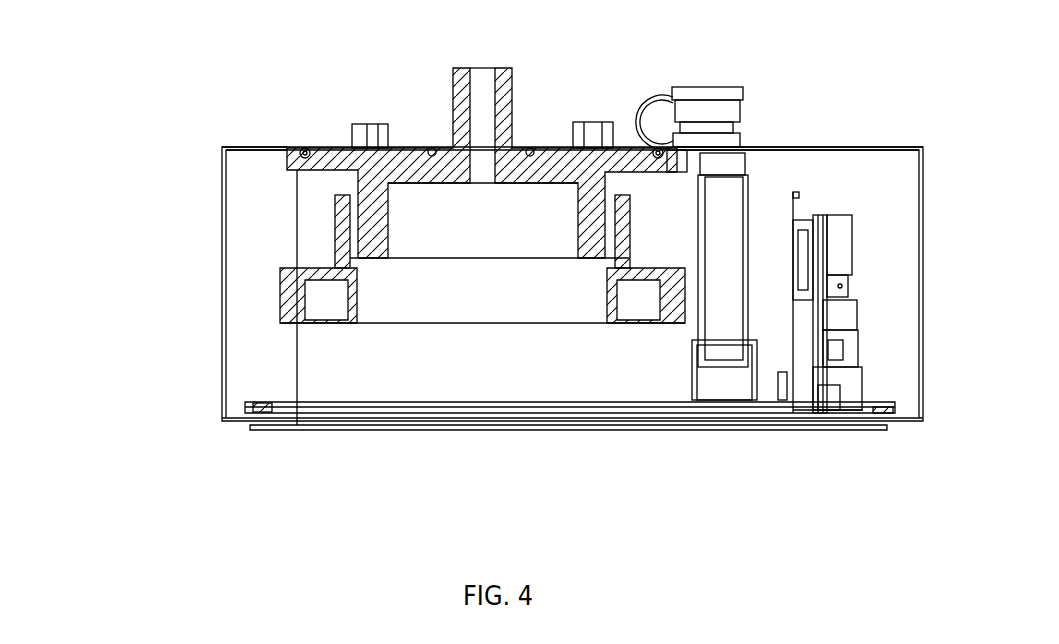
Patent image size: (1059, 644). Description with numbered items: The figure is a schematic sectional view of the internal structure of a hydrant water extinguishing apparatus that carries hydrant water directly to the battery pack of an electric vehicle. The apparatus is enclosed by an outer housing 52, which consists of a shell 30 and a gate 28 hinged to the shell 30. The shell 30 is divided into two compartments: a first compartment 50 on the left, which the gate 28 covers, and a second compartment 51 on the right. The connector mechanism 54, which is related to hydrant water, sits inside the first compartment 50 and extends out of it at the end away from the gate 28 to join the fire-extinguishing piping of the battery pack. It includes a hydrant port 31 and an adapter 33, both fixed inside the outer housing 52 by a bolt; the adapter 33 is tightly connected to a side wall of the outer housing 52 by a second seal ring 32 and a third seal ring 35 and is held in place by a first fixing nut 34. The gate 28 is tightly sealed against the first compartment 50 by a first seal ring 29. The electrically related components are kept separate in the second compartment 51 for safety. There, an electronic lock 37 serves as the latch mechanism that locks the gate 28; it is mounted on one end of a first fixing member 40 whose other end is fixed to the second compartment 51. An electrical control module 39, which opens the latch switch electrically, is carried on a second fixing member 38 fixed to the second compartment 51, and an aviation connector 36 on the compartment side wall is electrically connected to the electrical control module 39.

The gate 28 is at (253, 428).
The first seal ring 29 is at (247, 410).
The shell 30 is at (222, 397).
The hydrant port 31 is at (292, 295).
The second seal ring 32 is at (280, 147).
The adapter 33 is at (328, 165).
The first fixing nut 34 is at (367, 127).
The third seal ring 35 is at (430, 147).
The aviation connector 36 is at (710, 130).
The electronic lock 37 is at (718, 230).
The second fixing member 38 is at (793, 193).
The electrical control module 39 is at (826, 255).
The first fixing member 40 is at (695, 337).
The first compartment 50 is at (262, 208).
The second compartment 51 is at (893, 350).
The outer housing 52 is at (223, 330).
The connector mechanism 54 is at (530, 238).